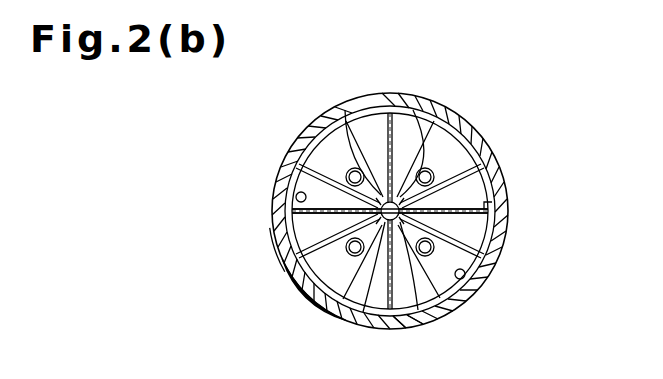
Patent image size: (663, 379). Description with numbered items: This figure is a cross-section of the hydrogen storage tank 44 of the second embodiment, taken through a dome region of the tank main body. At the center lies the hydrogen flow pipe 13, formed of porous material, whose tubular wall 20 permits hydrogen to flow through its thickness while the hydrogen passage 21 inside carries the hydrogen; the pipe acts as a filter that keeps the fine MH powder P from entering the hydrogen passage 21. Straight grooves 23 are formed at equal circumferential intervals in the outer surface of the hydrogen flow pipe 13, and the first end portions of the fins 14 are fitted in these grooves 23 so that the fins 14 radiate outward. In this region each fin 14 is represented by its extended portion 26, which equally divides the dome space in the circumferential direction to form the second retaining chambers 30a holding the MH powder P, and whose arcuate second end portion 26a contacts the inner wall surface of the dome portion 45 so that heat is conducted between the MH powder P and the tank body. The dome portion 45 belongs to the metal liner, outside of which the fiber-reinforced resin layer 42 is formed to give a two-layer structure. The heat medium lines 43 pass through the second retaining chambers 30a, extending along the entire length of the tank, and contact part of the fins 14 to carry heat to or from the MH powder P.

The hydrogen flow pipe 13 is at (348, 106).
The grooves 23 is at (363, 300).
The heat medium lines 43 is at (478, 130).
The dome portion 45 is at (482, 143).
The fiber-reinforced resin layer 42 is at (447, 314).
The hydrogen passage 21 is at (372, 310).
The tubular wall 20 is at (422, 310).
The extended portion 26 is at (492, 220).
The fins 14 is at (492, 220).
The second end portion 26a is at (493, 199).
The second retaining chambers 30a is at (462, 276).
The MH powder P is at (463, 236).
The hydrogen storage tank 44 is at (276, 310).